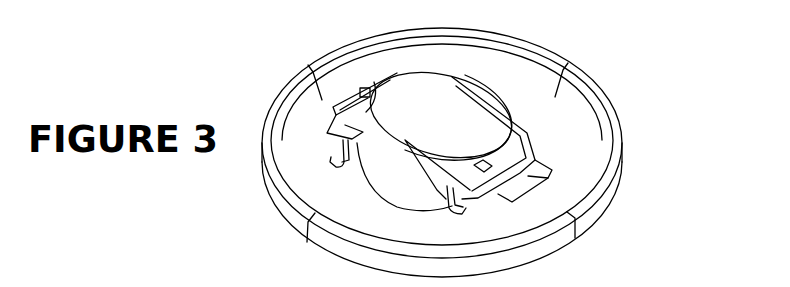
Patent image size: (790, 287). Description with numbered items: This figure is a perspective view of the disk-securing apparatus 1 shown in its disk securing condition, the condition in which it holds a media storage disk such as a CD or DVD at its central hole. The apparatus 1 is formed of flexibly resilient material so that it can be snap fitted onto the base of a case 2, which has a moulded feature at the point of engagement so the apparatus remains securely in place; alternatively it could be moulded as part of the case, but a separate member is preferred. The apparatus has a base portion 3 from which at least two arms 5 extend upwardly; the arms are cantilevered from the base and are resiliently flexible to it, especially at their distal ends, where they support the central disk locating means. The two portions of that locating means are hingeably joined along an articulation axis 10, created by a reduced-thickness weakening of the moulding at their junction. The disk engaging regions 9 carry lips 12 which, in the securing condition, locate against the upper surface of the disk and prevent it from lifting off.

The apparatus 1 is at (576, 51).
The case 2 is at (612, 138).
The base portion 3 is at (313, 125).
The arms 5 is at (330, 158).
The disk engaging regions 9 is at (507, 158).
The articulation axis 10 is at (408, 137).
The lip 12 is at (362, 90).